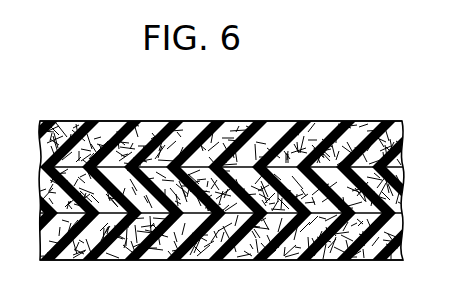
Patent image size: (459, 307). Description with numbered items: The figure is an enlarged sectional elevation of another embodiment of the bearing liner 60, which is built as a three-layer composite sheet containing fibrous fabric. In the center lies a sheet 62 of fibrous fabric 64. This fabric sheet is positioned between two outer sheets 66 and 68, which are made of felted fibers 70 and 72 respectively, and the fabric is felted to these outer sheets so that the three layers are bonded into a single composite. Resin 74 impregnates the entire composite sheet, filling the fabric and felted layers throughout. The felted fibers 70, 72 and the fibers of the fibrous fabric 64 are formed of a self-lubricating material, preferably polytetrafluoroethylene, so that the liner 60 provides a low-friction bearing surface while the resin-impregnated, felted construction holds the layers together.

The liner 60 is at (421, 79).
The sheet of fibrous fabric 62 is at (439, 213).
The fibrous fabric 64 is at (442, 157).
The sheet of felted fibers 66 is at (40, 143).
The sheet of felted fibers 68 is at (40, 238).
The felted fibers 70 is at (182, 135).
The felted fibers 72 is at (180, 262).
The resin 74 is at (284, 123).